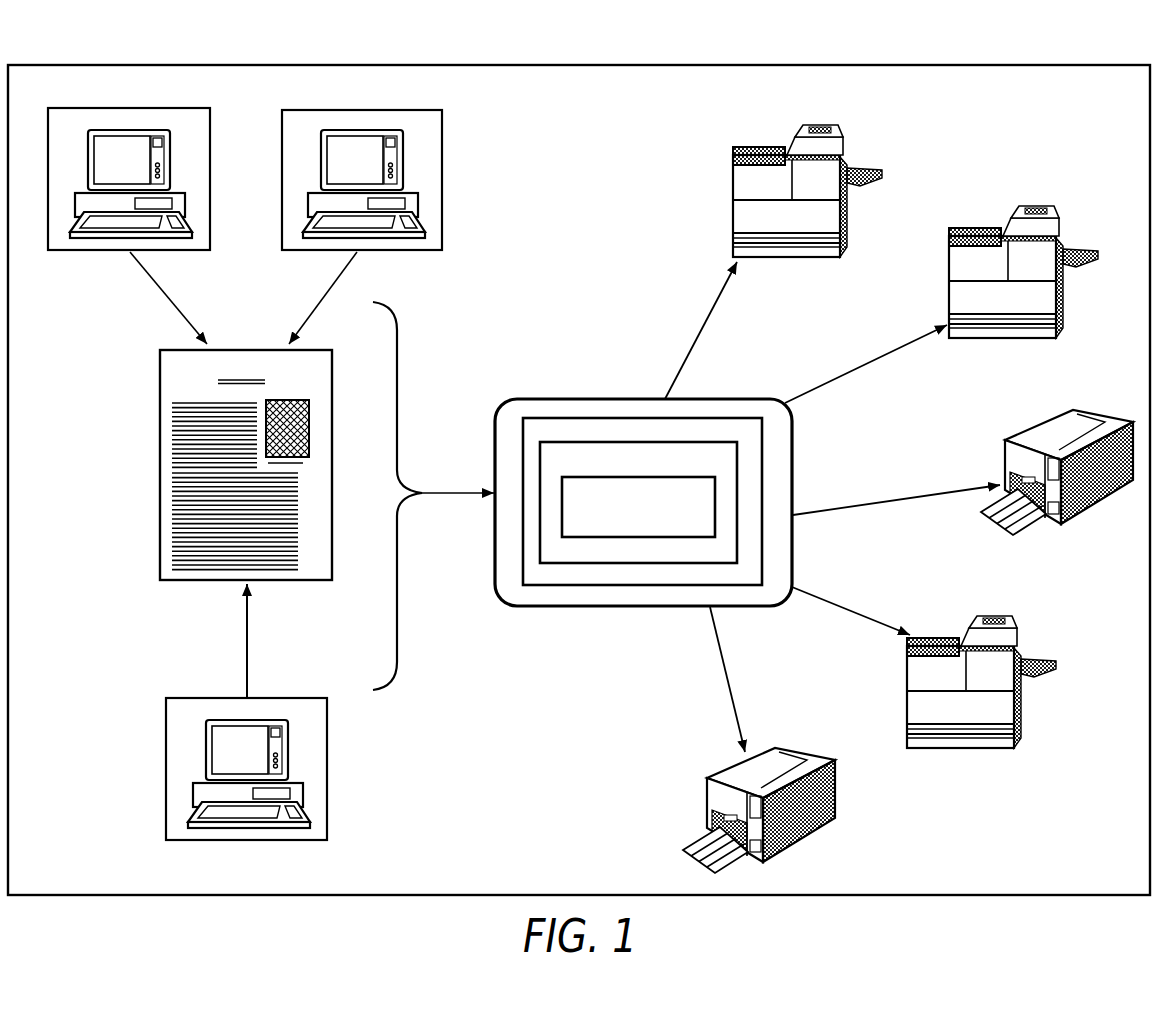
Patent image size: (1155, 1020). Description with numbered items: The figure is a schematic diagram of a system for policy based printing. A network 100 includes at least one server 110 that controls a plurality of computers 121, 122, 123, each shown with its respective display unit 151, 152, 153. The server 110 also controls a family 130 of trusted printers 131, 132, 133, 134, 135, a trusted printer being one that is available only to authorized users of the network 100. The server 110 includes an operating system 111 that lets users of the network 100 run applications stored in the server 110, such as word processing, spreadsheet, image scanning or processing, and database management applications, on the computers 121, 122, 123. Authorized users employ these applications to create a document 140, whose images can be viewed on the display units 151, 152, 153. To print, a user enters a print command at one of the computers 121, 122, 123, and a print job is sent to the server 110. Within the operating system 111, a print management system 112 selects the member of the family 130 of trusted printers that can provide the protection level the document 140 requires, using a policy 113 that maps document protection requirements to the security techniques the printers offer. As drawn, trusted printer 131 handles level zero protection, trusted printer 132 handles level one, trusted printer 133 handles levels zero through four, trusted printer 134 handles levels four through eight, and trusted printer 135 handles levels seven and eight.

The network 100 is at (204, 898).
The server 110 is at (658, 534).
The operating system 111 is at (684, 541).
The print management system 112 is at (692, 552).
The policy 113 is at (717, 505).
The computer 121 is at (192, 203).
The computer 122 is at (424, 203).
The computer 123 is at (307, 800).
The family of trusted printers 130 is at (888, 477).
The trusted printer 131 is at (1004, 457).
The trusted printer 132 is at (706, 798).
The trusted printer 133 is at (907, 705).
The trusted printer 134 is at (949, 268).
The trusted printer 135 is at (733, 185).
The document 140 is at (160, 467).
The display unit 151 is at (154, 163).
The display unit 152 is at (386, 168).
The display unit 153 is at (271, 749).